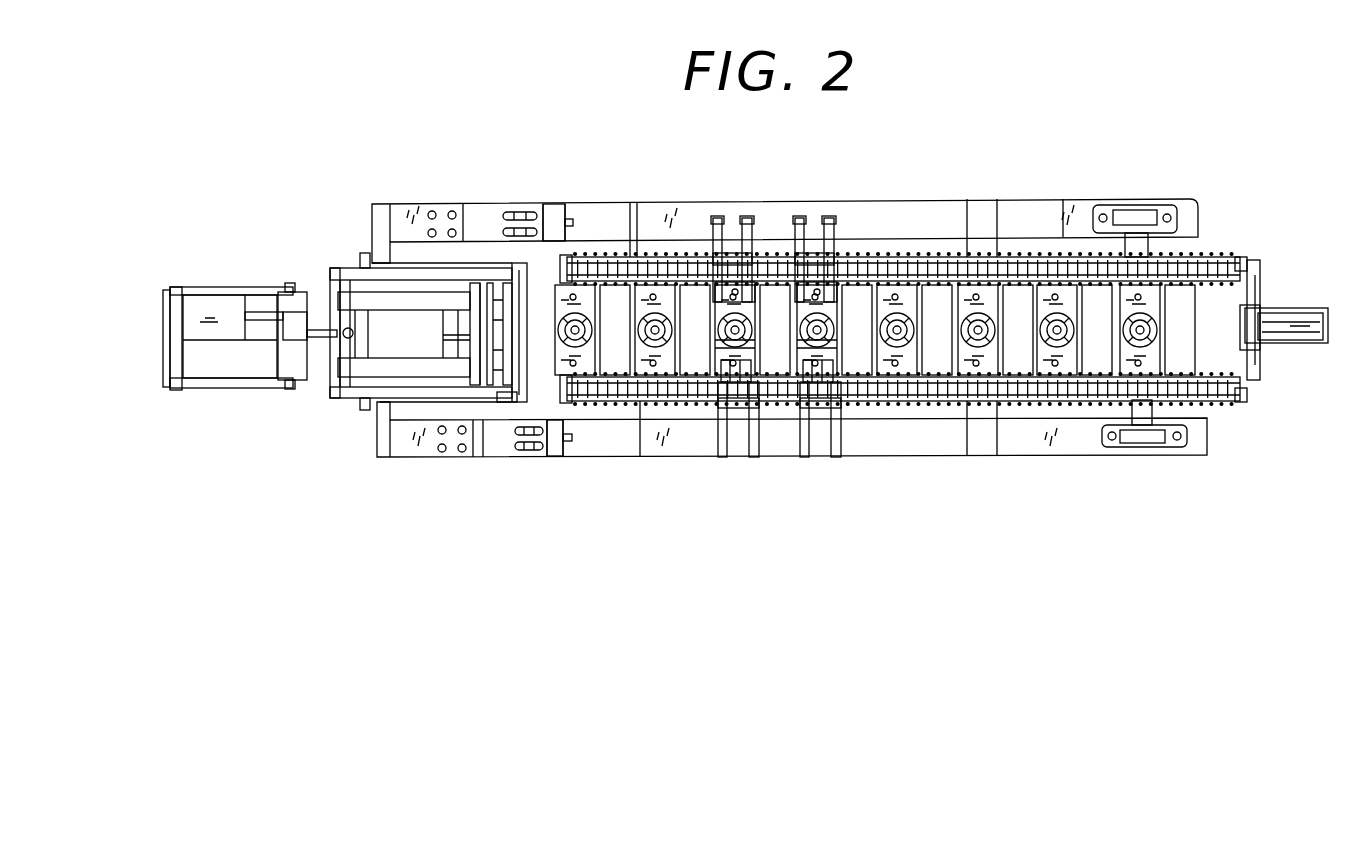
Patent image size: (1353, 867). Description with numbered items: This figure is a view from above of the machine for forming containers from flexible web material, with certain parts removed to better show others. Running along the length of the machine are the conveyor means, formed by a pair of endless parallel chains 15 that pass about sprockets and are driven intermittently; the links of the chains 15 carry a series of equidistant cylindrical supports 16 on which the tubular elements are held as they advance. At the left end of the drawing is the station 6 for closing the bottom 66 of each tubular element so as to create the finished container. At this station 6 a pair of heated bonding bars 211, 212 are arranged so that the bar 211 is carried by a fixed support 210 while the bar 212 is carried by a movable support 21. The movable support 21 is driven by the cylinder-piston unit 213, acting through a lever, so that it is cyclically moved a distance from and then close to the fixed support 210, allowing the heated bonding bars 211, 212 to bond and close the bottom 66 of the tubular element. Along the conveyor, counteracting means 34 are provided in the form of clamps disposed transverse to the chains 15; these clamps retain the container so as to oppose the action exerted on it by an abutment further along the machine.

The station for closing the bottom 6 is at (408, 332).
The endless parallel chains 15 is at (1063, 228).
The cylindrical supports 16 is at (955, 315).
The movable support 21 is at (482, 332).
The counteracting means 34 is at (790, 300).
The bottom 66 is at (505, 395).
The fixed support 210 is at (527, 272).
The heated bonding bar 211 is at (505, 300).
The heated bonding bar 212 is at (469, 290).
The cylinder-piston unit 213 is at (218, 337).